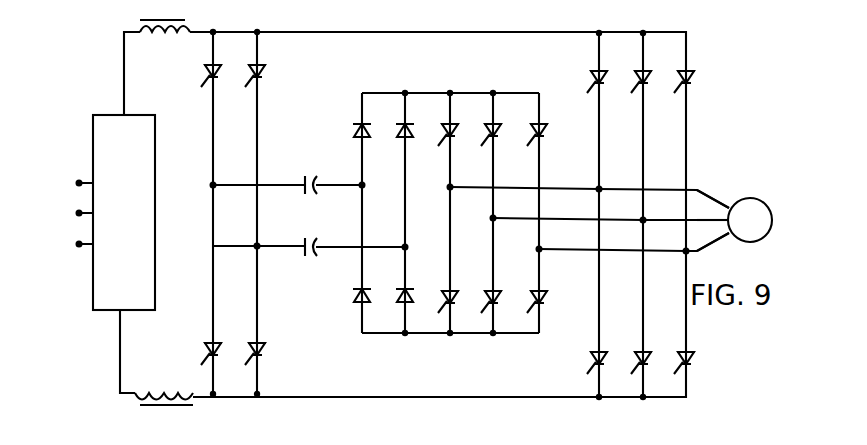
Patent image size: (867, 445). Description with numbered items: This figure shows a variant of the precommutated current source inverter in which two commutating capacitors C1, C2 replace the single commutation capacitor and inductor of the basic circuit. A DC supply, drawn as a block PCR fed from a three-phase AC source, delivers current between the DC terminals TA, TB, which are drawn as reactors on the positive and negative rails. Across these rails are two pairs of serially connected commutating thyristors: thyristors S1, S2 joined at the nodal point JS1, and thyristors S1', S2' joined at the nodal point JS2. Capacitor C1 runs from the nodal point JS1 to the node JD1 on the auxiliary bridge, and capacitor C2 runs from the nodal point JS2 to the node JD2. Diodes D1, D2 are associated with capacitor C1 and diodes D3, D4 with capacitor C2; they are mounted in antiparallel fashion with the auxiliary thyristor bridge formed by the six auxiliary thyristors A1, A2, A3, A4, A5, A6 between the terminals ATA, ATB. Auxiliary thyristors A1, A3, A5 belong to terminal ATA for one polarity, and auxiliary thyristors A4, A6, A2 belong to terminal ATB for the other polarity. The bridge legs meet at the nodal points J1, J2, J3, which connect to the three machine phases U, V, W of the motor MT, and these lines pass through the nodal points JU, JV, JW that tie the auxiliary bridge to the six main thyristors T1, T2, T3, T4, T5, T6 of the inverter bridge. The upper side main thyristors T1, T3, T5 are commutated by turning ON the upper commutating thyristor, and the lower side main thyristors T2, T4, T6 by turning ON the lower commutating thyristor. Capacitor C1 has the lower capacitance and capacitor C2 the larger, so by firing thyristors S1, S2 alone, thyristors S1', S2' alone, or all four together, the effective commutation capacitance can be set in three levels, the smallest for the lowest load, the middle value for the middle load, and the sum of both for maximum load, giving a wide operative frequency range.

The phase control rectifier PCR is at (124, 212).
The DC terminal TA is at (192, 28).
The DC terminal TB is at (162, 390).
The commutating thyristor S1 is at (197, 75).
The commutating thyristor S1' is at (275, 75).
The commutating thyristor S2 is at (192, 353).
The commutating thyristor S2' is at (275, 353).
The nodal point JS1 is at (212, 185).
The nodal point JS2 is at (256, 247).
The capacitor C1 is at (307, 176).
The capacitor C2 is at (309, 258).
The diode D1 is at (354, 128).
The diode D2 is at (355, 297).
The diode D3 is at (398, 128).
The diode D4 is at (409, 300).
The auxiliary thyristor A1 is at (459, 130).
The auxiliary thyristor A2 is at (546, 304).
The auxiliary thyristor A3 is at (502, 130).
The auxiliary thyristor A4 is at (458, 304).
The auxiliary thyristor A5 is at (548, 130).
The auxiliary thyristor A6 is at (502, 304).
The terminal ATA is at (423, 92).
The terminal ATB is at (425, 335).
The junction JD1 is at (364, 186).
The junction JD2 is at (407, 248).
The nodal point J1 is at (448, 187).
The nodal point J2 is at (491, 218).
The nodal point J3 is at (537, 250).
The main thyristor T1 is at (590, 77).
The main thyristor T2 is at (678, 352).
The main thyristor T3 is at (634, 78).
The main thyristor T4 is at (590, 355).
The main thyristor T5 is at (694, 78).
The main thyristor T6 is at (634, 352).
The nodal point JU is at (597, 188).
The nodal point JV is at (641, 221).
The nodal point JW is at (684, 253).
The phase U is at (698, 188).
The phase V is at (705, 219).
The phase W is at (708, 249).
The motor MT is at (750, 220).